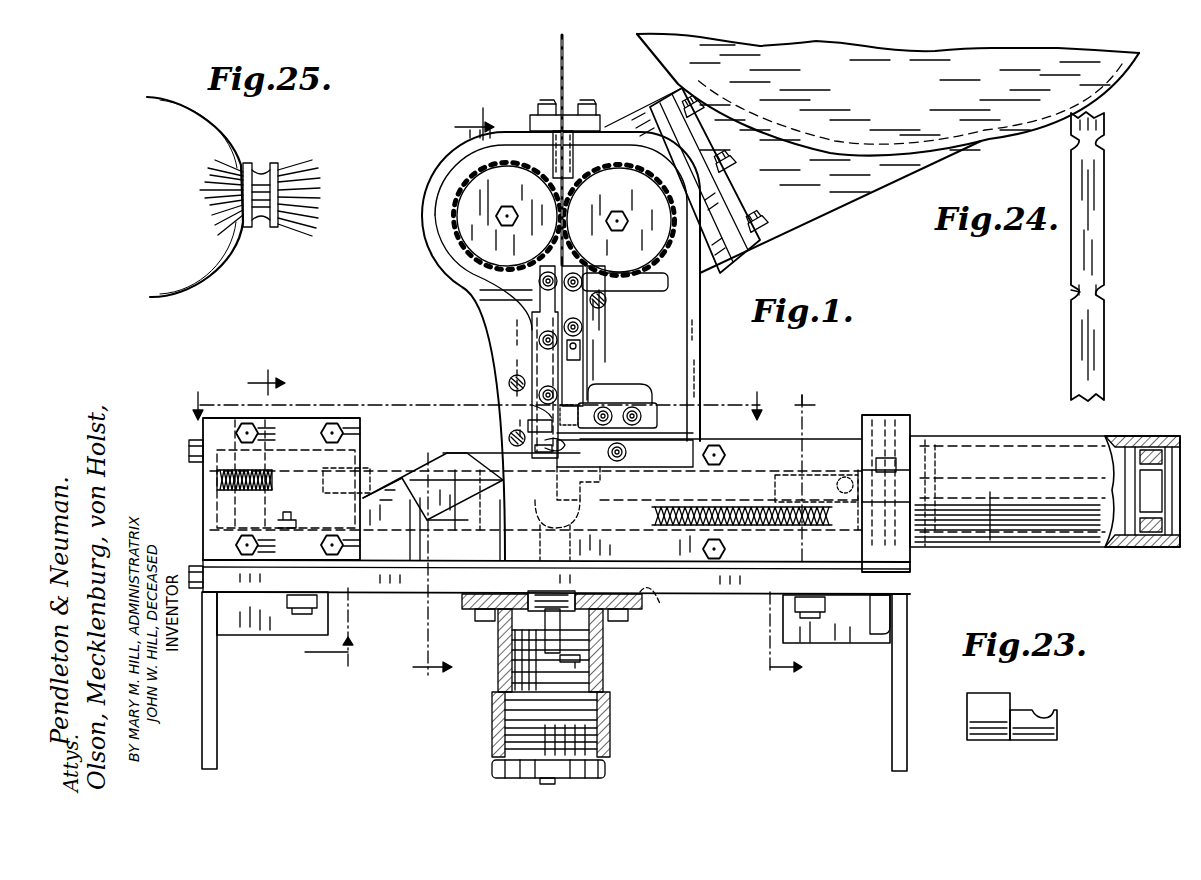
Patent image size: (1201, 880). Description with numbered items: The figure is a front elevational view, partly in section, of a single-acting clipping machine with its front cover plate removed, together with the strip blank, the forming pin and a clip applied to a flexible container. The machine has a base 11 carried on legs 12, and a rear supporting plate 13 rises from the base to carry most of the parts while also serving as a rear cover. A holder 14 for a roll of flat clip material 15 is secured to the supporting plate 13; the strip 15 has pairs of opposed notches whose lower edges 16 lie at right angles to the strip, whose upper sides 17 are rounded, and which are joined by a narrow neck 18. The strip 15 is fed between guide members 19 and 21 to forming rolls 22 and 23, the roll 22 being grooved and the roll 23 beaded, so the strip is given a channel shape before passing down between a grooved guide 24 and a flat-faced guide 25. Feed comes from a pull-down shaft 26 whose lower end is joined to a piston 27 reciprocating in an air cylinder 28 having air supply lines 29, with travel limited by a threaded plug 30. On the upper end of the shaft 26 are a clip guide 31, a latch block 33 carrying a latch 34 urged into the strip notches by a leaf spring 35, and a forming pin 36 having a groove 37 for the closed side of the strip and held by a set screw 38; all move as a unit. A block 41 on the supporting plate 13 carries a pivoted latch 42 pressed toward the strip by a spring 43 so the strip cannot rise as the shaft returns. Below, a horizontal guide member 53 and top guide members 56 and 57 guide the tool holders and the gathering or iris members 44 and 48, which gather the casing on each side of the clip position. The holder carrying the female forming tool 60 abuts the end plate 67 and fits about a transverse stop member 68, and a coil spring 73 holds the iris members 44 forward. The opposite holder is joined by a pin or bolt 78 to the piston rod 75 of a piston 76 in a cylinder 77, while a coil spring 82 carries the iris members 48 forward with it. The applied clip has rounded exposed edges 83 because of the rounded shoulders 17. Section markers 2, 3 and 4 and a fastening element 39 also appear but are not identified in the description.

In FIG. 1, the section line 2- 2 is at (453, 400).
In FIG. 1, the section line 3- 3 is at (540, 203).
In FIG. 1, the section line 4- 4 is at (470, 410).
In FIG. 1, the base 11 is at (748, 596).
In FIG. 1, the legs 12 is at (218, 674).
In FIG. 1, the rear supporting plate 13 is at (492, 321).
In FIG. 1, the holder 14 is at (985, 125).
In FIG. 1, the strip 15 is at (566, 77).
In FIG. 24, the strip 15 is at (1098, 192).
In FIG. 24, the lower notch edges 16 is at (1103, 294).
In FIG. 24, the rounded shoulders 17 is at (1072, 292).
In FIG. 24, the narrow neck 18 is at (1075, 294).
In FIG. 1, the guide member 19 is at (550, 115).
In FIG. 1, the guide member 21 is at (598, 116).
In FIG. 1, the forming roll 22 is at (457, 195).
In FIG. 1, the forming roll 23 is at (645, 260).
In FIG. 1, the guide 24 is at (478, 294).
In FIG. 1, the guide 25 is at (615, 293).
In FIG. 1, the pull-down shaft 26 is at (630, 595).
In FIG. 1, the piston 27 is at (600, 657).
In FIG. 1, the air cylinder 28 is at (612, 697).
In FIG. 1, the air supply lines 29 is at (560, 784).
In FIG. 1, the plug 30 is at (608, 738).
In FIG. 1, the clip guide 31 is at (535, 359).
In FIG. 1, the latch holder 33 is at (582, 330).
In FIG. 1, the latch 34 is at (605, 364).
In FIG. 1, the leaf spring 35 is at (582, 350).
In FIG. 1, the forming pin 36 is at (528, 426).
In FIG. 23, the forming pin 36 is at (1022, 712).
In FIG. 1, the groove 37 is at (530, 409).
In FIG. 23, the groove 37 is at (1045, 716).
In FIG. 1, the set screw 38 is at (535, 448).
In FIG. 1, the screw 39 is at (510, 383).
In FIG. 1, the block 41 is at (619, 415).
In FIG. 1, the latch 42 is at (600, 441).
In FIG. 1, the spring 43 is at (606, 396).
In FIG. 1, the gathering or iris member 44 is at (393, 522).
In FIG. 1, the gathering or iris member 48 is at (490, 542).
In FIG. 1, the guide member 53 is at (415, 556).
In FIG. 1, the top guide member 56 is at (840, 472).
In FIG. 1, the top guide member 57 is at (297, 427).
In FIG. 1, the female forming tool 60 is at (612, 488).
In FIG. 1, the end plate 67 is at (189, 449).
In FIG. 1, the transverse stop member 68 is at (284, 516).
In FIG. 1, the coil spring 73 is at (228, 418).
In FIG. 1, the piston rod 75 is at (1000, 510).
In FIG. 1, the piston 76 is at (1150, 437).
In FIG. 1, the cylinder 77 is at (990, 437).
In FIG. 1, the pin or bolt 78 is at (862, 440).
In FIG. 1, the coil spring 82 is at (690, 578).
In FIG. 25, the exposed edges 83 is at (249, 163).